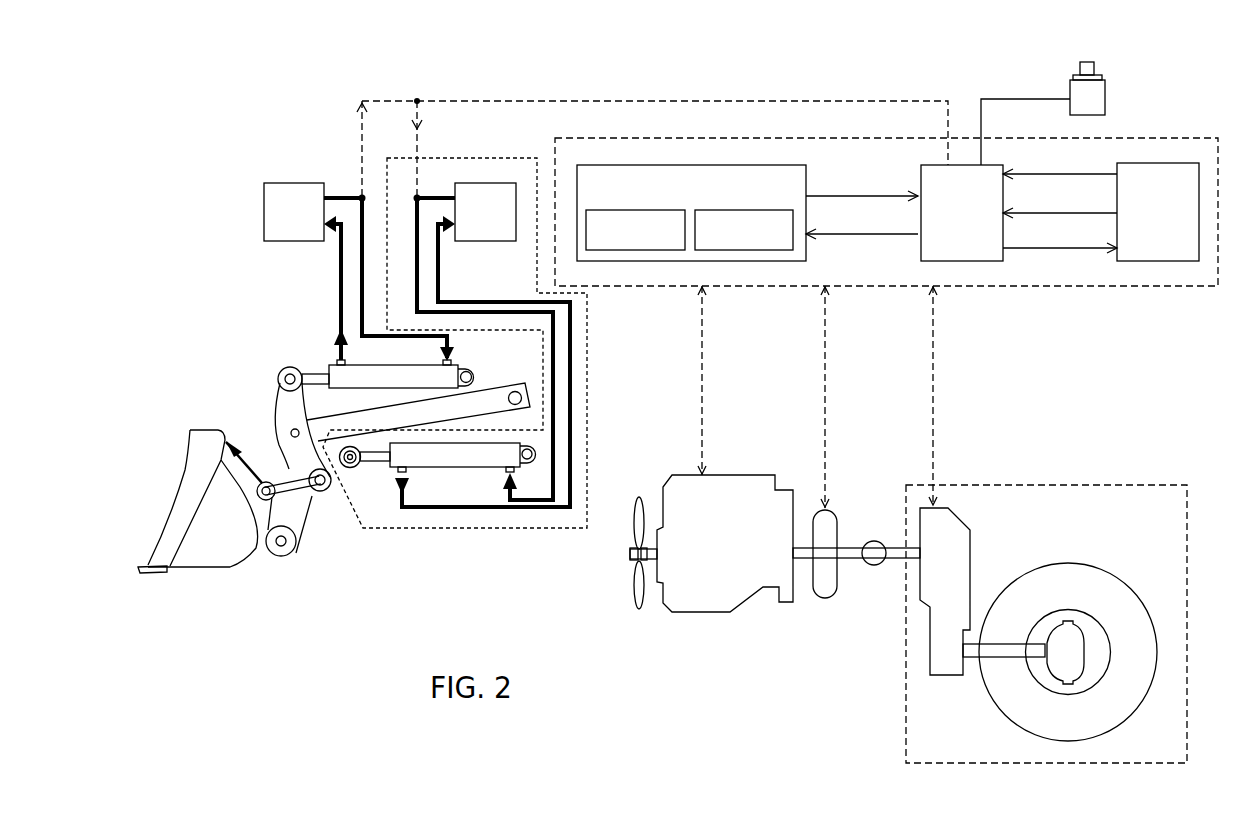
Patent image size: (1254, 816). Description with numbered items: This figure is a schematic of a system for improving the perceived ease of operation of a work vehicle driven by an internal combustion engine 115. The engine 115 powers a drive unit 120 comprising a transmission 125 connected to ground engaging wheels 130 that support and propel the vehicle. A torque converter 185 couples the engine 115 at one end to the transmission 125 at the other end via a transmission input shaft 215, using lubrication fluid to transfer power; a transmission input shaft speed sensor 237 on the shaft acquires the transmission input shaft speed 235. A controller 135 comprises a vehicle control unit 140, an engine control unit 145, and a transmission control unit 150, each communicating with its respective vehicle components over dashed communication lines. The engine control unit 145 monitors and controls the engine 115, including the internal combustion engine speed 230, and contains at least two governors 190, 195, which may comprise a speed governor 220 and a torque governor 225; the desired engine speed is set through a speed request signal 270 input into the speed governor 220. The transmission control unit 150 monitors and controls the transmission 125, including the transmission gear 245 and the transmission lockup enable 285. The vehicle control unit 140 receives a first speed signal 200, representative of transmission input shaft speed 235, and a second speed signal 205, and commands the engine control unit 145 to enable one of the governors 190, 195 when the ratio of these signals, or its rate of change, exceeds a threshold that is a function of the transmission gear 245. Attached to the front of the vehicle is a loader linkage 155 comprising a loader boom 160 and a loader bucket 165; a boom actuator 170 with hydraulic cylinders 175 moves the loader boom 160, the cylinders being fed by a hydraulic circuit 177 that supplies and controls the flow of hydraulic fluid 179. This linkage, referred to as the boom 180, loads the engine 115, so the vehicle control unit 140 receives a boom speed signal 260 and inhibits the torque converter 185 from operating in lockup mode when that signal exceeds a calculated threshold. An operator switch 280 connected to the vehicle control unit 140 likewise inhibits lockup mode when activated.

The internal combustion engine 115 is at (705, 554).
The drive unit 120 is at (1117, 485).
The transmission 125 is at (930, 562).
The ground engaging wheels 130 is at (1013, 685).
The controller 135 is at (1197, 138).
The vehicle control unit 140 is at (947, 223).
The engine control unit 145 is at (672, 197).
The transmission control unit 150 is at (1143, 223).
The loader linkage 155 is at (245, 410).
The loader boom 160 is at (298, 510).
The loader bucket 165 is at (198, 536).
The boom actuator 170 is at (455, 364).
The hydraulic cylinder 175 is at (313, 375).
The hydraulic circuit 177 is at (279, 222).
The hydraulic fluid 179 is at (362, 262).
The boom 180 is at (507, 529).
The torque converter 185 is at (825, 598).
The governor 190 is at (635, 230).
The governor 195 is at (744, 230).
The first speed signal 200 is at (1060, 164).
The second speed signal 205 is at (862, 185).
The transmission input shaft 215 is at (855, 548).
The speed governor 220 is at (604, 240).
The torque governor 225 is at (712, 240).
The internal combustion engine speed 230 is at (862, 185).
The transmission input shaft speed 235 is at (1060, 164).
The transmission input shaft speed sensor 237 is at (873, 566).
The transmission gear 245 is at (1060, 202).
The boom speed signal 260 is at (637, 99).
The speed request signal 270 is at (862, 225).
The operator switch 280 is at (1090, 100).
The transmission lockup enable 285 is at (1060, 238).